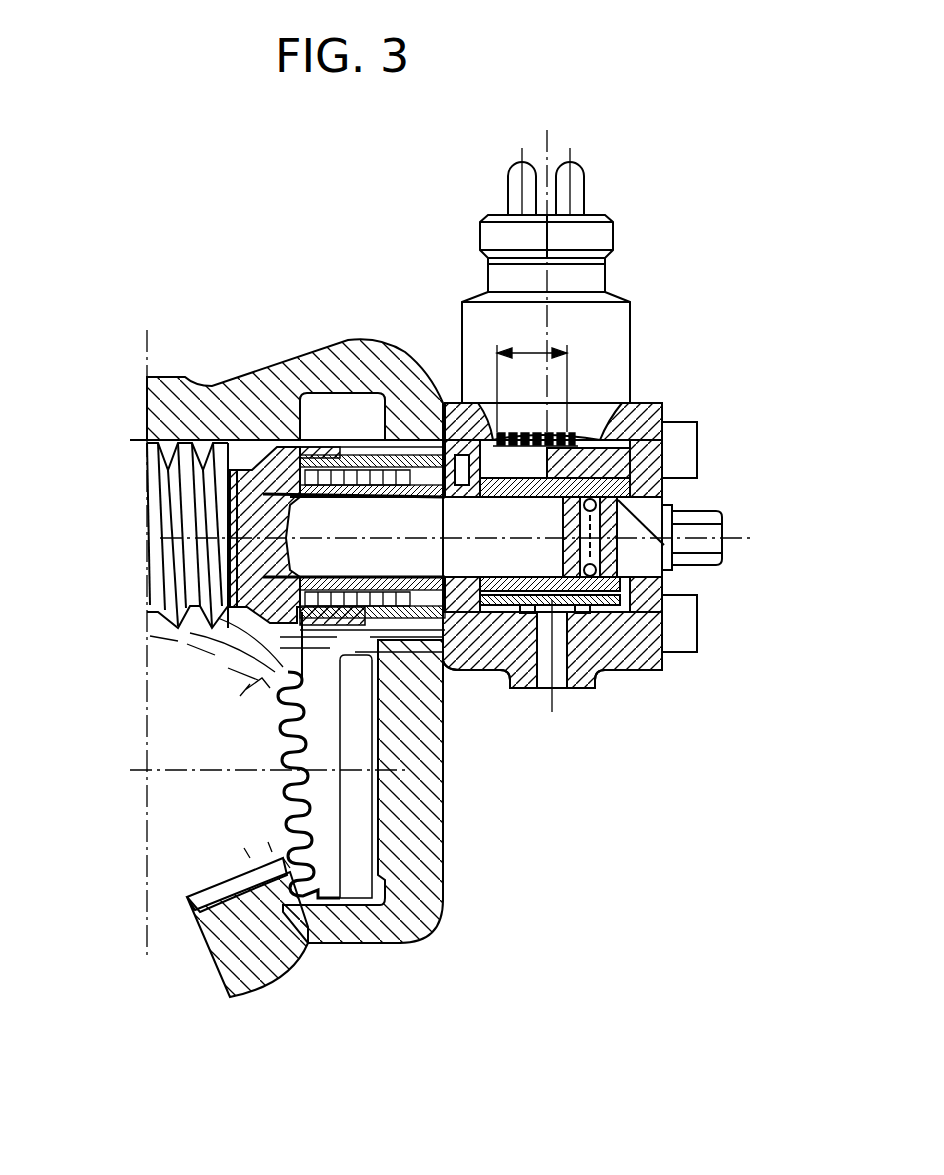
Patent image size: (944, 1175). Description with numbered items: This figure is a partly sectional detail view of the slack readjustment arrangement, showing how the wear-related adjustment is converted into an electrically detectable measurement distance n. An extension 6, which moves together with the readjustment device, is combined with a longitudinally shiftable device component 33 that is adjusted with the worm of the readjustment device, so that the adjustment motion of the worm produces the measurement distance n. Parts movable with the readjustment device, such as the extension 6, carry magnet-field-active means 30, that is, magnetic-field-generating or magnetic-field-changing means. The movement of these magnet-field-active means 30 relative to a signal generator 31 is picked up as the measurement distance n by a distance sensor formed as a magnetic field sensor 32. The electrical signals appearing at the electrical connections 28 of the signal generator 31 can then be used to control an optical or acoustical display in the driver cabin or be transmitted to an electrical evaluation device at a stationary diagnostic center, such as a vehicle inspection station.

The extension 6 is at (437, 511).
The electrical connections 28 is at (557, 180).
The magnet-field-active means 30 is at (680, 427).
The signal generator 31 is at (482, 338).
The magnetic field sensor 32 is at (532, 430).
The device component 33 is at (688, 565).